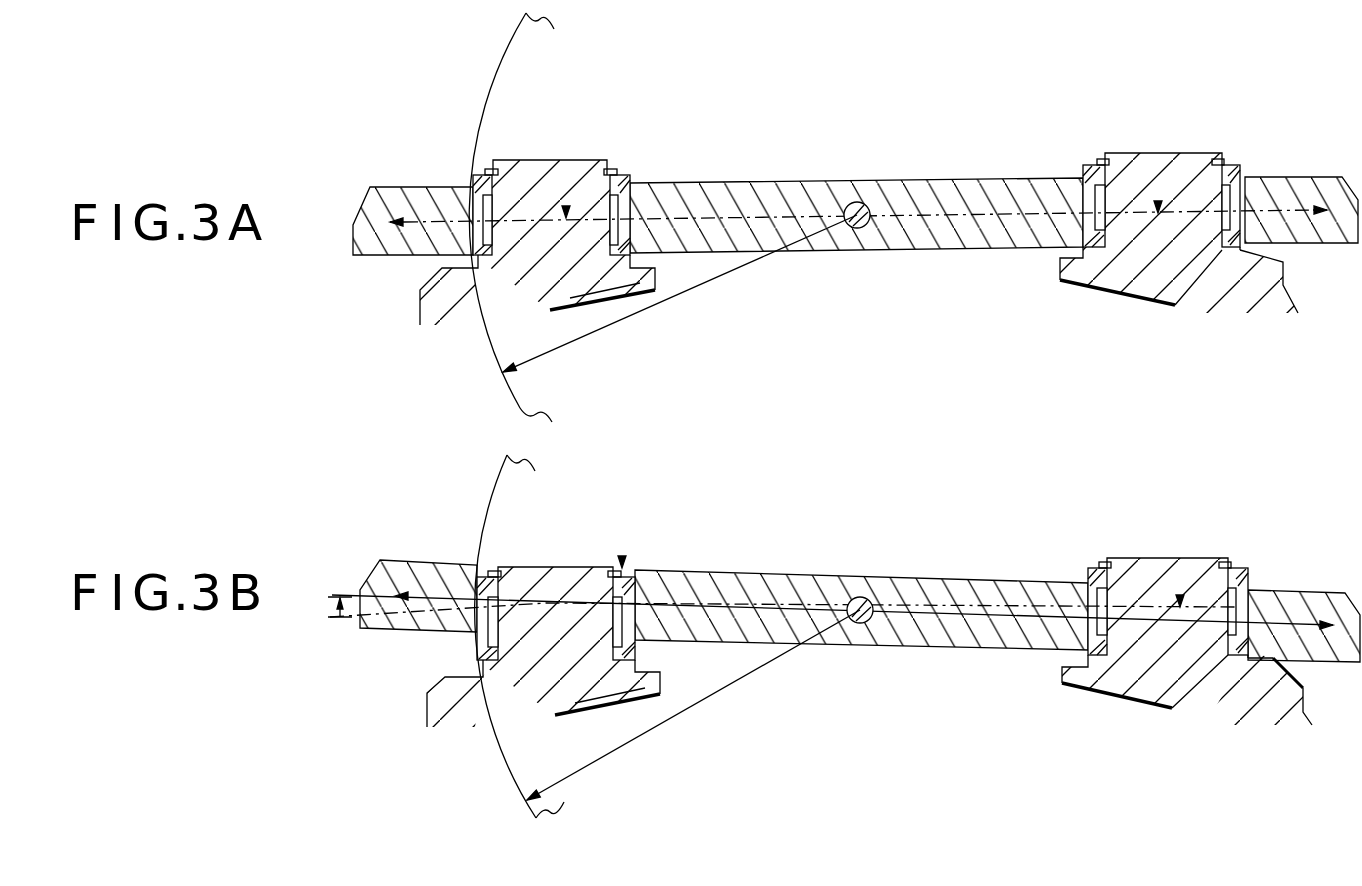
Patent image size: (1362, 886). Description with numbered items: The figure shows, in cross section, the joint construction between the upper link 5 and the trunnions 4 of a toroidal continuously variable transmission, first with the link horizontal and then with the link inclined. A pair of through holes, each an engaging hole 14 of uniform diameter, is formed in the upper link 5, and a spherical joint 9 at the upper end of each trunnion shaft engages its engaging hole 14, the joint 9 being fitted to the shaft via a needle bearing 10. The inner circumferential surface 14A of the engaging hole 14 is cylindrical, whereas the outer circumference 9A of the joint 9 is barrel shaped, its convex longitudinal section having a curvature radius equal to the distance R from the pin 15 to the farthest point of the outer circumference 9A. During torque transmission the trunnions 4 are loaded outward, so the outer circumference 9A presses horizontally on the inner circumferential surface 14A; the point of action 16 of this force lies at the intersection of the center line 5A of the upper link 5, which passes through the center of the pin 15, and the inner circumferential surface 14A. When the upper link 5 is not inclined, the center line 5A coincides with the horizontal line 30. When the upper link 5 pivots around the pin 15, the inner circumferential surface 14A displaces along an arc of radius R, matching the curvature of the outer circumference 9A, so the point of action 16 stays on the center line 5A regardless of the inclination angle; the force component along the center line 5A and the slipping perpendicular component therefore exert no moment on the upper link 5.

In FIG. 3A, the trunnion 4 is at (607, 160).
In FIG. 3B, the trunnion 4 is at (565, 567).
In FIG. 3A, the upper link 5 is at (942, 178).
In FIG. 3B, the upper link 5 is at (907, 577).
In FIG. 3A, the center line of the upper link 5A is at (858, 216).
In FIG. 3B, the center line of the upper link 5A is at (653, 605).
In FIG. 3A, the spherical joint 9 is at (478, 175).
In FIG. 3B, the spherical joint 9 is at (487, 652).
In FIG. 3A, the outer circumference of the joint 9A is at (473, 178).
In FIG. 3B, the outer circumference of the joint 9A is at (483, 653).
In FIG. 3A, the needle bearing 10 is at (487, 200).
In FIG. 3B, the needle bearing 10 is at (495, 640).
In FIG. 3A, the engaging hole 14 is at (566, 212).
In FIG. 3B, the engaging hole 14 is at (622, 560).
In FIG. 3A, the inner circumferential surface of the engaging hole 14A is at (480, 258).
In FIG. 3B, the inner circumferential surface of the engaging hole 14A is at (690, 535).
In FIG. 3A, the pin 15 is at (848, 228).
In FIG. 3B, the pin 15 is at (853, 624).
In FIG. 3A, the point of action 16 is at (468, 190).
In FIG. 3B, the point of action 16 is at (473, 583).
In FIG. 3A, the horizontal line 30 is at (748, 217).
In FIG. 3B, the horizontal line 30 is at (712, 608).
In FIG. 3A, the distance R is at (692, 290).
In FIG. 3B, the distance R is at (692, 705).